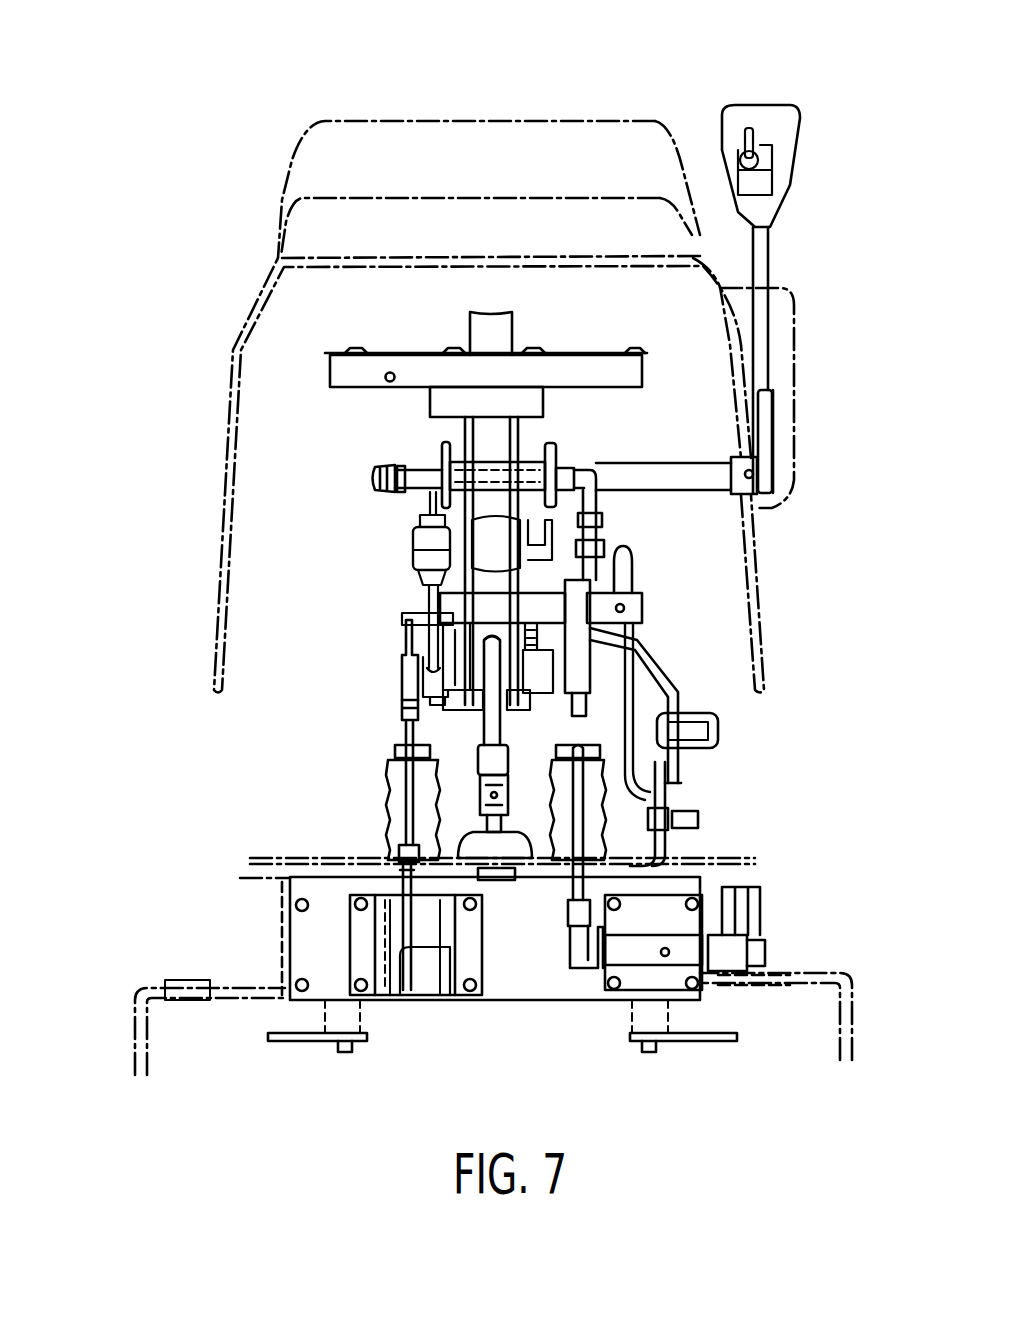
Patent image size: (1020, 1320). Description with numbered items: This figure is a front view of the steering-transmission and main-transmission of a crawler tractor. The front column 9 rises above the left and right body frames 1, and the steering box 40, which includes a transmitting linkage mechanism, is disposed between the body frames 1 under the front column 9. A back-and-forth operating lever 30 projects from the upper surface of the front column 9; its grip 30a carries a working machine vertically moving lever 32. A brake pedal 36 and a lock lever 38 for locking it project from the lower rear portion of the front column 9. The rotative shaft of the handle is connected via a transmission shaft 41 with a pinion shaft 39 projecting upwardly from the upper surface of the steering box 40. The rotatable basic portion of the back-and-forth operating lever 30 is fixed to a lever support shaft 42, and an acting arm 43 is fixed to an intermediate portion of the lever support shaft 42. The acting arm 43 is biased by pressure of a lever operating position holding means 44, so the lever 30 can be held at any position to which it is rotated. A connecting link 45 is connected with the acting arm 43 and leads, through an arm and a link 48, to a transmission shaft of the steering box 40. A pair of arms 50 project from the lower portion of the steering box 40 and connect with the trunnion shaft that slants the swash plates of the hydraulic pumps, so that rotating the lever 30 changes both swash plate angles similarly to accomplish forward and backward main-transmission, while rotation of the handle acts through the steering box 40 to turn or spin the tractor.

The body frame 1 is at (148, 975).
The front column 9 is at (247, 318).
The back-and-forth operating lever 30 is at (772, 268).
The grip 30a is at (787, 105).
The working machine vertically moving lever 32 is at (750, 128).
The brake pedal 36 is at (722, 735).
The lock lever 38 is at (634, 570).
The pinion shaft 39 is at (516, 868).
The steering box 40 is at (285, 880).
The transmission shaft 41 is at (492, 722).
The lever support shaft 42 is at (676, 462).
The acting arm 43 is at (565, 465).
The lever operating position holding means 44 is at (559, 415).
The connecting link 45 is at (578, 968).
The link 48 is at (765, 930).
The arm 50 is at (280, 1045).